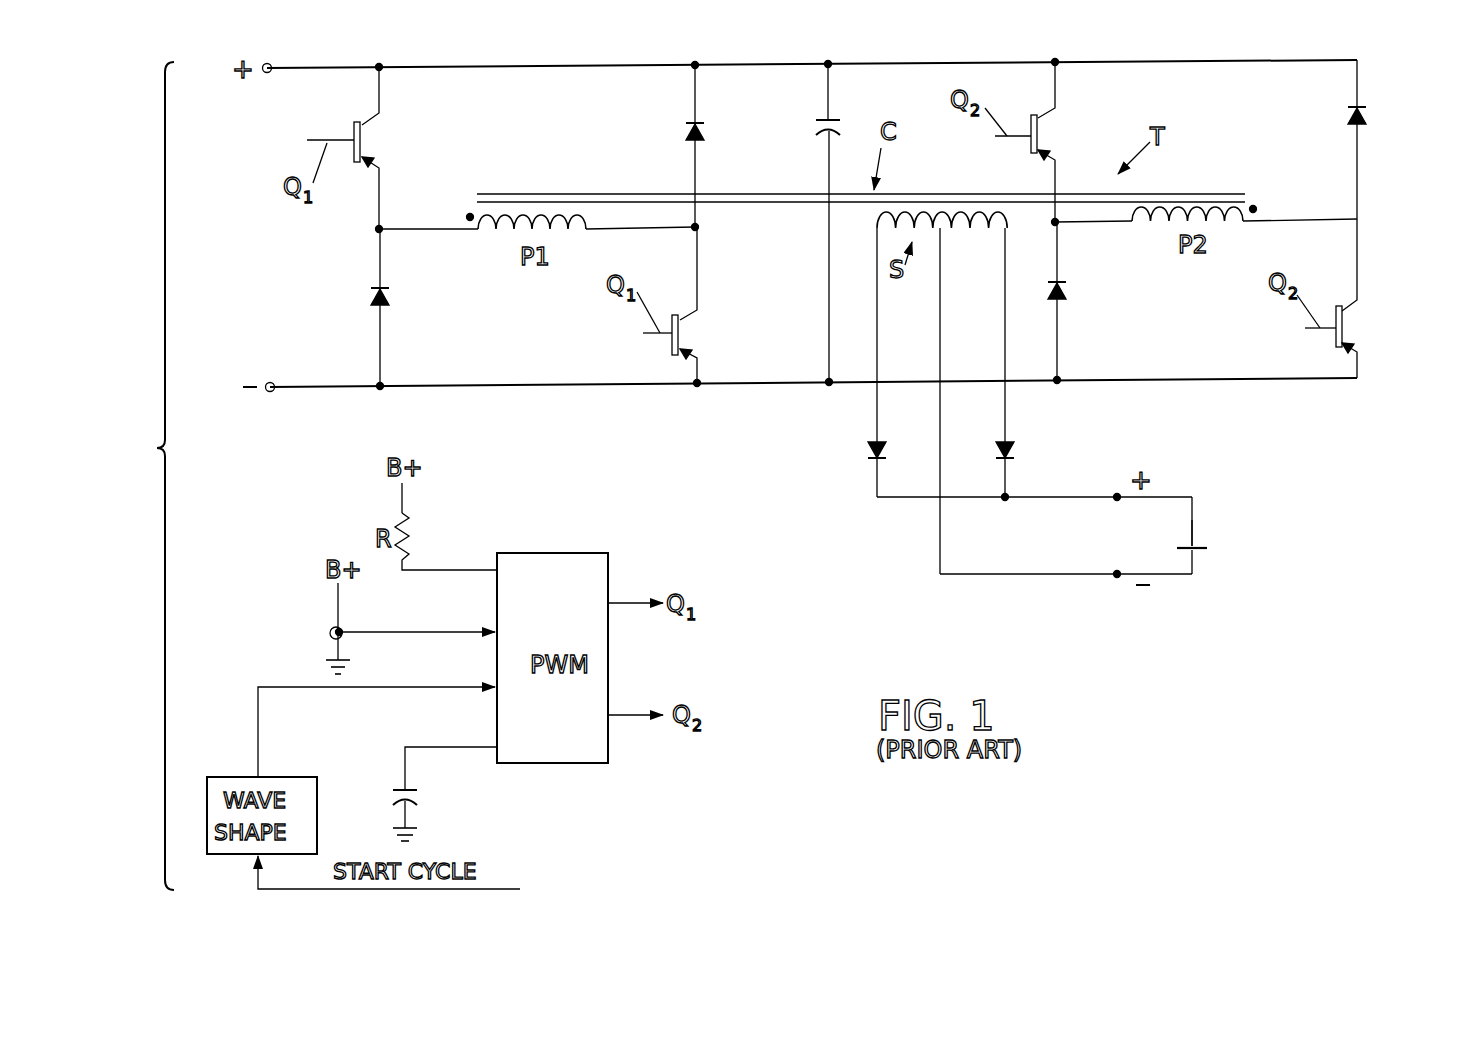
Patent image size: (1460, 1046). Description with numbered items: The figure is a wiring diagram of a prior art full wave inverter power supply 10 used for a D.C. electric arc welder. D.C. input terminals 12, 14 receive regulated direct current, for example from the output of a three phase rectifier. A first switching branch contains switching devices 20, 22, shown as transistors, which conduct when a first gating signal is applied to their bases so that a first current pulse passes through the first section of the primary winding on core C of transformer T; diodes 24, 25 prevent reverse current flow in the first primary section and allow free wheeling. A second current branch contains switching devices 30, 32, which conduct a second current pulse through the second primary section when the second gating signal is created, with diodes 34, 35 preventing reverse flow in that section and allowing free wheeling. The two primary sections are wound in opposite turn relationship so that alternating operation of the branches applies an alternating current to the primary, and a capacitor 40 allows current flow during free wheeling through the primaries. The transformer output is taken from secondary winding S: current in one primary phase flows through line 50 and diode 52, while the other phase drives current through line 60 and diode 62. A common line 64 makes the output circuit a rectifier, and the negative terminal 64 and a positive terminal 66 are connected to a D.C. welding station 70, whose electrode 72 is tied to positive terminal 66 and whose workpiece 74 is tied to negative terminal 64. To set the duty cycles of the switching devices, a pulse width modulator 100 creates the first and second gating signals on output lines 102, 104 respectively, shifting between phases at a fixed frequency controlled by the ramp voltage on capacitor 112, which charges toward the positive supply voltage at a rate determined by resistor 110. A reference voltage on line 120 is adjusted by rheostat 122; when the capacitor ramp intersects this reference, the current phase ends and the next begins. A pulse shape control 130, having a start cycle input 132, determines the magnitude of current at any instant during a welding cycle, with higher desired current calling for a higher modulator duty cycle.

The full wave inverter power supply 10 is at (1389, 66).
The D.C. input terminal 12 is at (266, 73).
The D.C. input terminal 14 is at (274, 383).
The switching device 20 is at (366, 142).
The switching device 22 is at (685, 328).
The diode 24 is at (388, 302).
The diode 25 is at (685, 136).
The switching device 30 is at (1043, 124).
The switching device 32 is at (1348, 318).
The diode 34 is at (1065, 292).
The diode 35 is at (1370, 118).
The capacitor 40 is at (818, 121).
The line 50 is at (1010, 414).
The diode 52 is at (1015, 447).
The line 60 is at (880, 358).
The diode 62 is at (868, 450).
The common line 64 is at (945, 338).
The positive terminal 66 is at (1118, 493).
The D.C. welding station 70 is at (1212, 533).
The electrode 72 is at (1157, 527).
The workpiece 74 is at (1203, 551).
The pulse width modulator 100 is at (568, 552).
The output line 102 is at (640, 600).
The output line 104 is at (632, 722).
The resistor 110 is at (409, 534).
The capacitor 112 is at (420, 800).
The line 120 is at (400, 632).
The rheostat 122 is at (330, 629).
The pulse shape control 130 is at (290, 776).
The start cycle input 132 is at (256, 886).